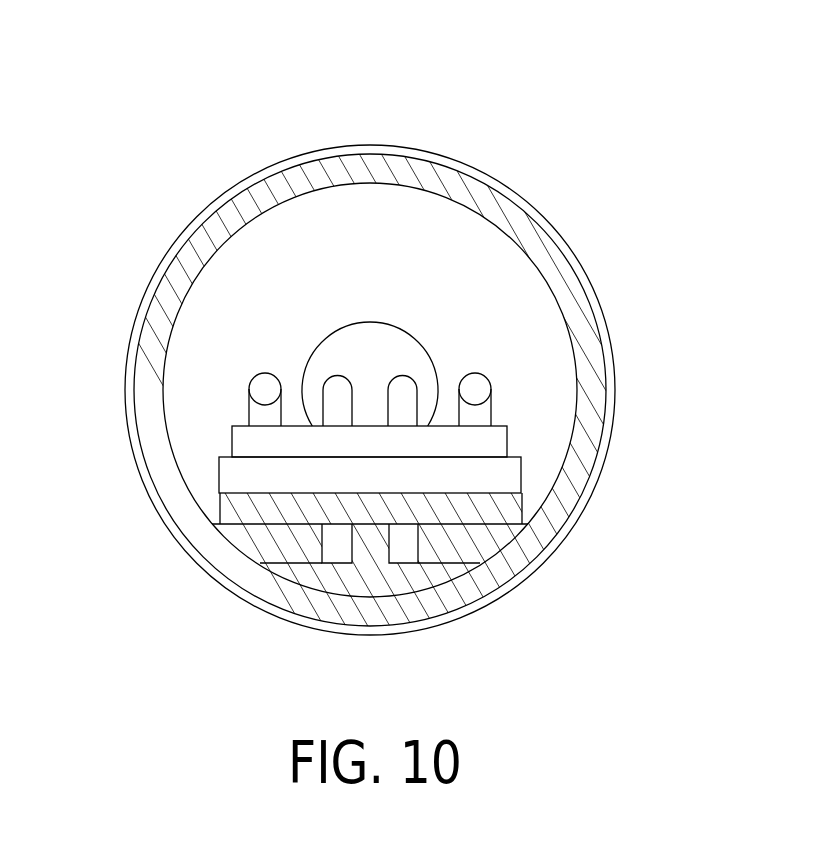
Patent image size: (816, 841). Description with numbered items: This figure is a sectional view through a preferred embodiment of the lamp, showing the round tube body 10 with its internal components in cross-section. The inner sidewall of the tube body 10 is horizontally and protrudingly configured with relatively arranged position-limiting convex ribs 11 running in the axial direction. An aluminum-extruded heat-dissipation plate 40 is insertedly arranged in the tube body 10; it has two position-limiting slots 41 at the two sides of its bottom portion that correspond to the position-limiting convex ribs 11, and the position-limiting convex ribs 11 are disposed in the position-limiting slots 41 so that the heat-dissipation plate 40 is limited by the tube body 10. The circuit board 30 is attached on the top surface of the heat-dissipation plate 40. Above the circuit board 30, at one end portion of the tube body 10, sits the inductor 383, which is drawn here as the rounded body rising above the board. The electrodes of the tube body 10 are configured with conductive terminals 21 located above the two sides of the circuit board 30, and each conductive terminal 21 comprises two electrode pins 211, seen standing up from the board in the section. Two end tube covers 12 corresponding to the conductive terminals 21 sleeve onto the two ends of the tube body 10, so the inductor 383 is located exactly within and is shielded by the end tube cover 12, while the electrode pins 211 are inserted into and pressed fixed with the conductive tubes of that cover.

The tube body 10 is at (326, 140).
The end tube cover 12 is at (232, 187).
The inductor 383 is at (403, 353).
The electrode pin 211 is at (477, 387).
The conductive terminal 21 is at (488, 439).
The circuit board 30 is at (205, 470).
The heat-dissipation plate 40 is at (540, 508).
The position-limiting slot 41 is at (337, 542).
The position-limiting convex rib 11 is at (465, 545).